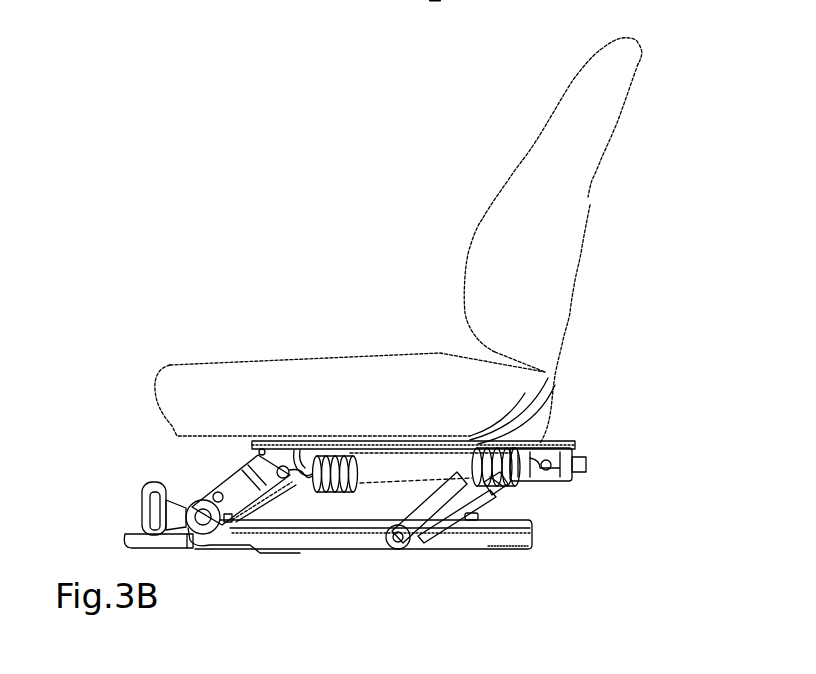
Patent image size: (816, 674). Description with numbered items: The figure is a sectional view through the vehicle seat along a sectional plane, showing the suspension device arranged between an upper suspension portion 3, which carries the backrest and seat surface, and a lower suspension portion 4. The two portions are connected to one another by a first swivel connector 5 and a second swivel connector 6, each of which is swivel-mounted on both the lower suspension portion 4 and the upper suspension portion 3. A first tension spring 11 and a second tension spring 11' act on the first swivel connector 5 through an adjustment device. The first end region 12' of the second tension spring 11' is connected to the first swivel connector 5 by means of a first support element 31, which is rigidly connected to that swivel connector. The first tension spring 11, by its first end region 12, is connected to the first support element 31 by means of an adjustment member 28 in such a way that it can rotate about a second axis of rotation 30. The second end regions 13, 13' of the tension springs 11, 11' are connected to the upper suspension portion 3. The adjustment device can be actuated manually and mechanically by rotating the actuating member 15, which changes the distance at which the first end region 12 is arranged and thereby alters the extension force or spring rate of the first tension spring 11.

The upper suspension portion 3 is at (566, 449).
The lower suspension portion 4 is at (507, 540).
The first swivel connector 5 is at (222, 480).
The second swivel connector 6 is at (430, 520).
The first tension spring 11 is at (335, 522).
The second tension spring 11' is at (425, 400).
The first end region of the first tension spring 12 is at (296, 524).
The first end region of the second tension spring 12' is at (293, 401).
The second end region of the first tension spring 13 is at (548, 482).
The second end region of the second tension spring 13' is at (560, 488).
The actuating member 15 is at (152, 500).
The adjustment member 28 is at (252, 512).
The second axis of rotation 30 is at (222, 530).
The first support element 31 is at (263, 448).